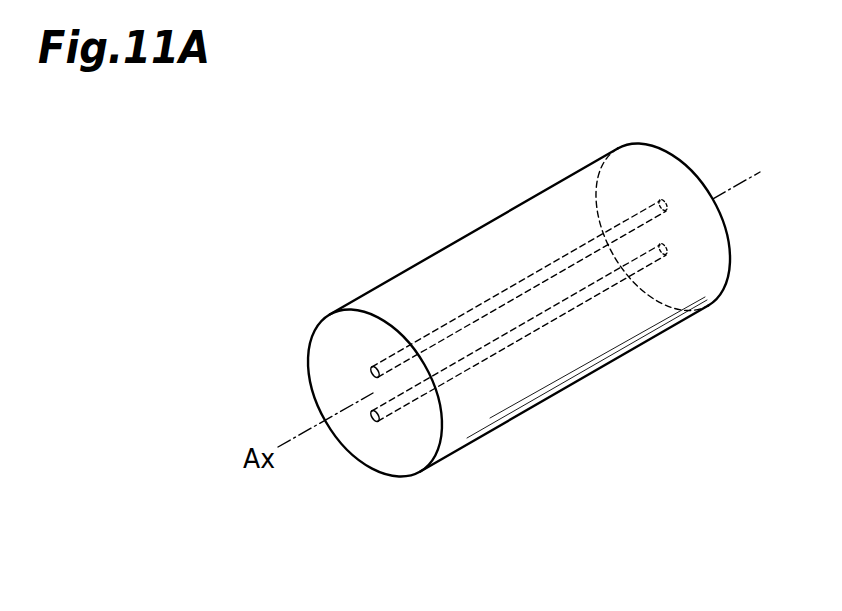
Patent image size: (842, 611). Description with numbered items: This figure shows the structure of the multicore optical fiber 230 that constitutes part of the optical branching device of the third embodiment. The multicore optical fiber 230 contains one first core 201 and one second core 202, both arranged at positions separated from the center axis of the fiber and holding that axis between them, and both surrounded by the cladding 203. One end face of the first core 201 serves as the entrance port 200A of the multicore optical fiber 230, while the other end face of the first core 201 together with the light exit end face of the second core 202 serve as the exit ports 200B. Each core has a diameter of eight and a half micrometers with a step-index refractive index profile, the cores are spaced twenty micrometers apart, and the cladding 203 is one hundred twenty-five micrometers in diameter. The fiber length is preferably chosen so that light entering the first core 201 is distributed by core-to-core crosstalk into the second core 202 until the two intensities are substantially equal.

The multicore optical fiber 230 is at (547, 170).
The cladding 203 is at (357, 327).
The exit ports 200B is at (370, 372).
The entrance port 200A is at (668, 202).
The first core 201 is at (498, 293).
The second core 202 is at (532, 332).